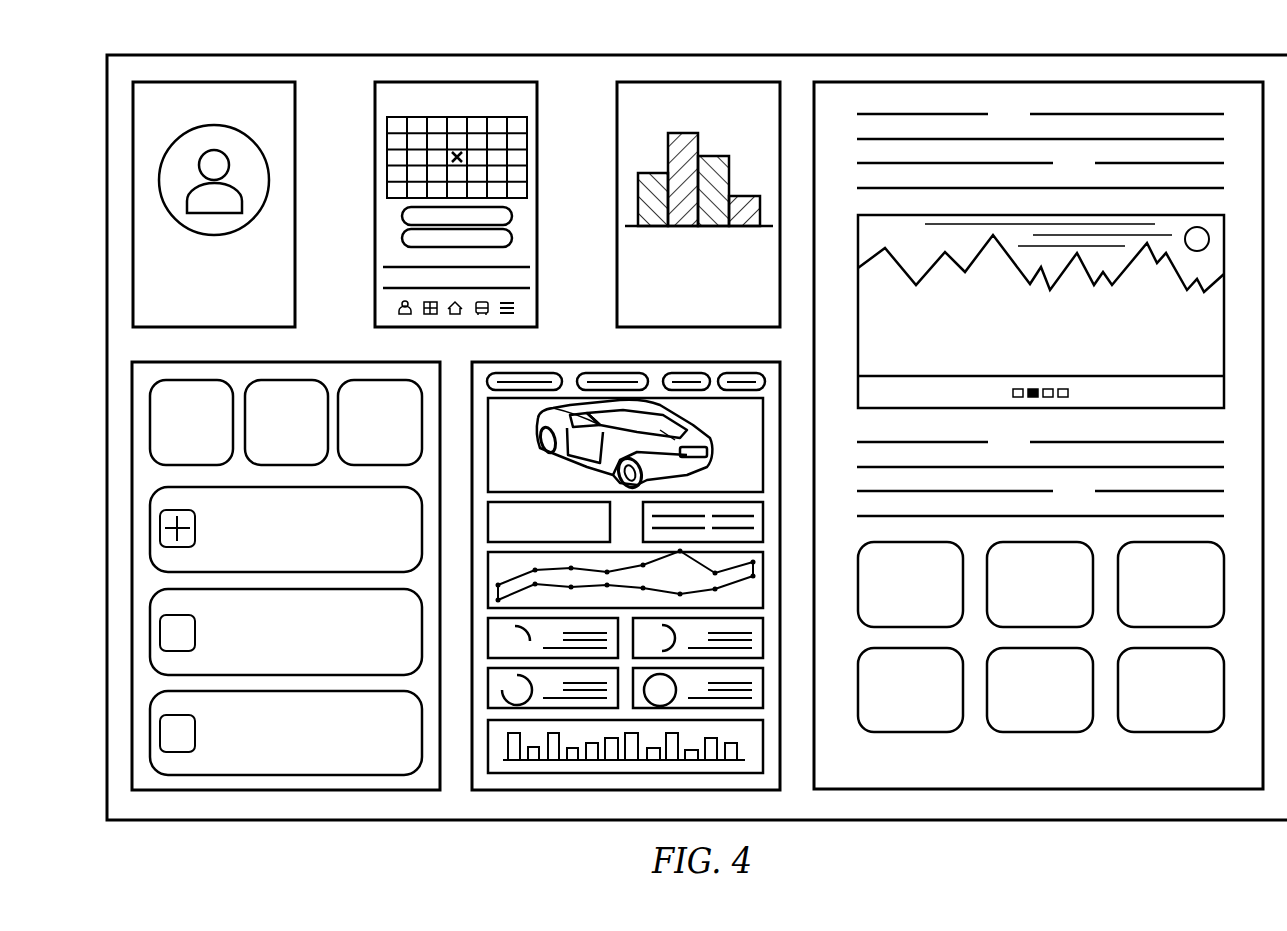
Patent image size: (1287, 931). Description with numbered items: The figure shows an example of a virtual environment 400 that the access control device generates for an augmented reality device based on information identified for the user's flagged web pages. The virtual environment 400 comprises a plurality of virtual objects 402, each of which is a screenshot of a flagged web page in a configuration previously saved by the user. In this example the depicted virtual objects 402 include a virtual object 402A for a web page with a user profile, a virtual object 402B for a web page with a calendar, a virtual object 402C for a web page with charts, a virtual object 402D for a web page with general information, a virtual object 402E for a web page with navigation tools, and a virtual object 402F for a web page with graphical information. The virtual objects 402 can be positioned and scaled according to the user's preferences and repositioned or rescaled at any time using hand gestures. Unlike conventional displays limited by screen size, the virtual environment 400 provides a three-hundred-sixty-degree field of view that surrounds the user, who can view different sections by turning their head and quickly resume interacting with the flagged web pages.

The virtual environment 400 is at (1132, 54).
The virtual objects 402 is at (689, 442).
The virtual object for a web page with a user profile 402A is at (245, 82).
The virtual object for a web page with a calendar 402B is at (463, 82).
The virtual object for a web page with charts 402C is at (708, 82).
The virtual object for a web page with general information 402D is at (1022, 82).
The virtual object for a web page with navigation tools 402E is at (285, 790).
The virtual object for a web page with graphical information 402F is at (563, 790).